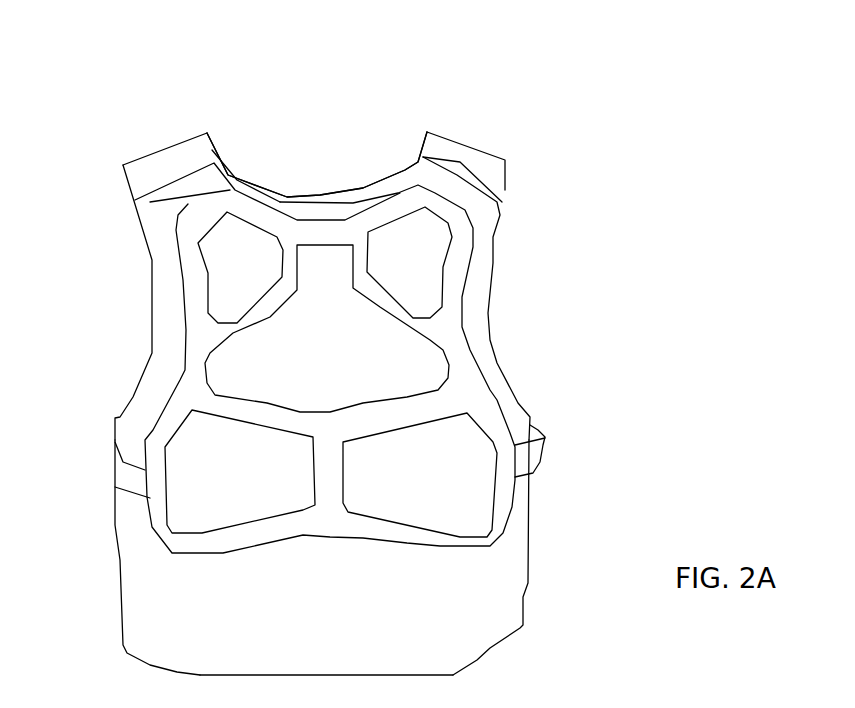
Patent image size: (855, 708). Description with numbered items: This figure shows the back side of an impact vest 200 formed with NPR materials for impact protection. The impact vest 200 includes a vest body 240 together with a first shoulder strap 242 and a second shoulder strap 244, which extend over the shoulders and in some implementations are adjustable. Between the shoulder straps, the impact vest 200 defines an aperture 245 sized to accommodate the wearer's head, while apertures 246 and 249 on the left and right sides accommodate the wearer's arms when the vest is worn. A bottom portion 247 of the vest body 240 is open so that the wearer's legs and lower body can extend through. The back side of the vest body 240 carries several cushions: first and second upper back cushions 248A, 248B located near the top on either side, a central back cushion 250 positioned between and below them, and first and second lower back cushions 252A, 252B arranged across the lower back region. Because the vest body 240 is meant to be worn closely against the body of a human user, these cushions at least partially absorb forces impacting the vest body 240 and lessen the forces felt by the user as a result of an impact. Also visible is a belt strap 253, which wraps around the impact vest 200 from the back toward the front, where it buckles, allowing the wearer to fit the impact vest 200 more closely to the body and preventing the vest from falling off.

The impact vest 200 is at (151, 80).
The vest body 240 is at (160, 577).
The first shoulder strap 242 is at (165, 143).
The second shoulder strap 244 is at (470, 147).
The aperture 245 is at (323, 195).
The aperture 246 is at (150, 293).
The bottom portion 247 is at (370, 675).
The first upper back cushion 248A is at (223, 257).
The second upper back cushion 248B is at (418, 247).
The aperture 249 is at (487, 322).
The central back cushion 250 is at (330, 357).
The first lower back cushion 252A is at (215, 473).
The second lower back cushion 252B is at (462, 487).
The belt strap 253 is at (530, 457).